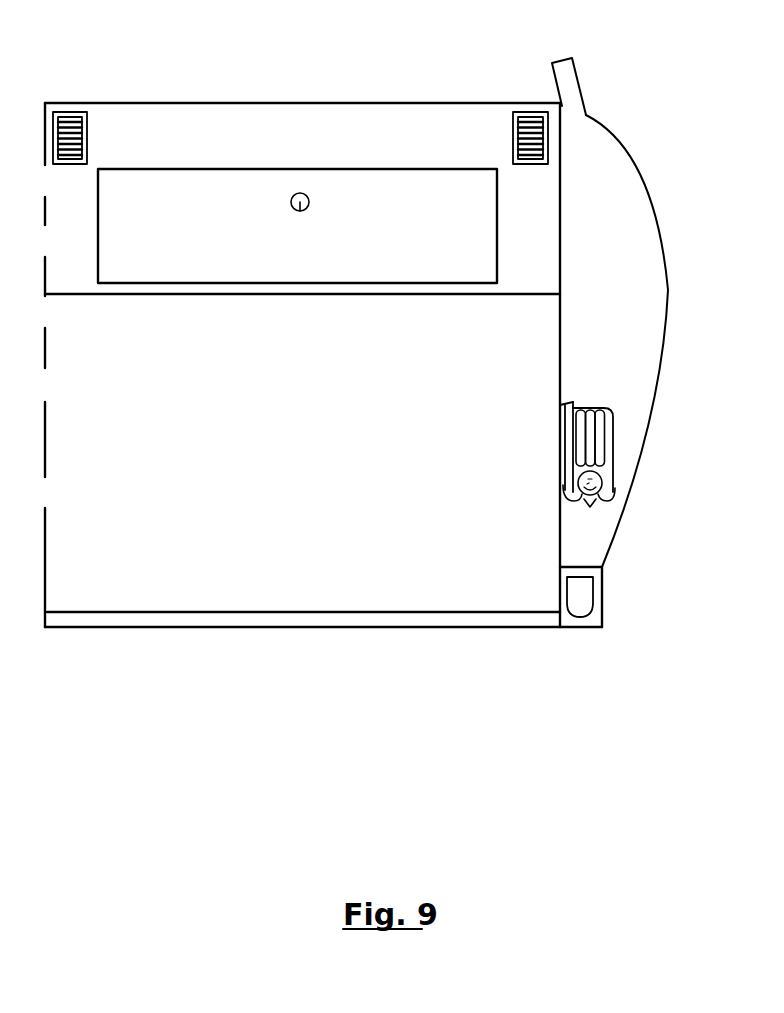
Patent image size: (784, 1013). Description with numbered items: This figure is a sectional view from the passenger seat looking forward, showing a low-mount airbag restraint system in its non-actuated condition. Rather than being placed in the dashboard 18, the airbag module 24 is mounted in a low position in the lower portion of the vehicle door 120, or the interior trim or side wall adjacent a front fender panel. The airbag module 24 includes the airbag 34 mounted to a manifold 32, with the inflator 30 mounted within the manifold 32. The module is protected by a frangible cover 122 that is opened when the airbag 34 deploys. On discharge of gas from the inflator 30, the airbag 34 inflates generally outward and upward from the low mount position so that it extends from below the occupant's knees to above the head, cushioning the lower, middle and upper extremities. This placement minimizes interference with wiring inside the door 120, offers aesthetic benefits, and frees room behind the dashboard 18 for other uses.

The dashboard 18 is at (302, 112).
The vehicle door 120 is at (643, 172).
The frangible cover 122 is at (565, 475).
The airbag module 24 is at (622, 416).
The airbag 34 is at (605, 445).
The inflator 30 is at (603, 484).
The manifold 32 is at (607, 497).